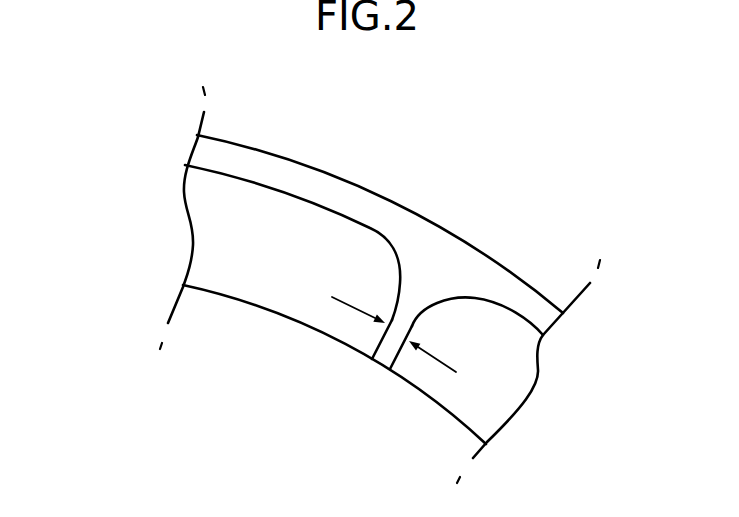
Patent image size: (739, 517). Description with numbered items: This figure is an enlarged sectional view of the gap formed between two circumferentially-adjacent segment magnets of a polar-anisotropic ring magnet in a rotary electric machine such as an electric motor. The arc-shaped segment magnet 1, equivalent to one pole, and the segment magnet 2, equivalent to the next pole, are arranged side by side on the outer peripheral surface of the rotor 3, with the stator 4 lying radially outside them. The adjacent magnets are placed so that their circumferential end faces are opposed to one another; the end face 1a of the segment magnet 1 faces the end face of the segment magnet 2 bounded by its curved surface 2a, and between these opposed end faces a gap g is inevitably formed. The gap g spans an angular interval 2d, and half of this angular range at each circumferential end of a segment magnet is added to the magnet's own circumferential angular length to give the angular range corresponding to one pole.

The segment magnet 1 is at (262, 247).
The end face 1a is at (399, 320).
The segment magnet 2 is at (517, 378).
The curved surface of second core piece 2a is at (412, 326).
The angular interval of the gap 2d is at (443, 361).
The rotor 3 is at (207, 306).
The stator 4 is at (227, 122).
The gap g is at (384, 348).